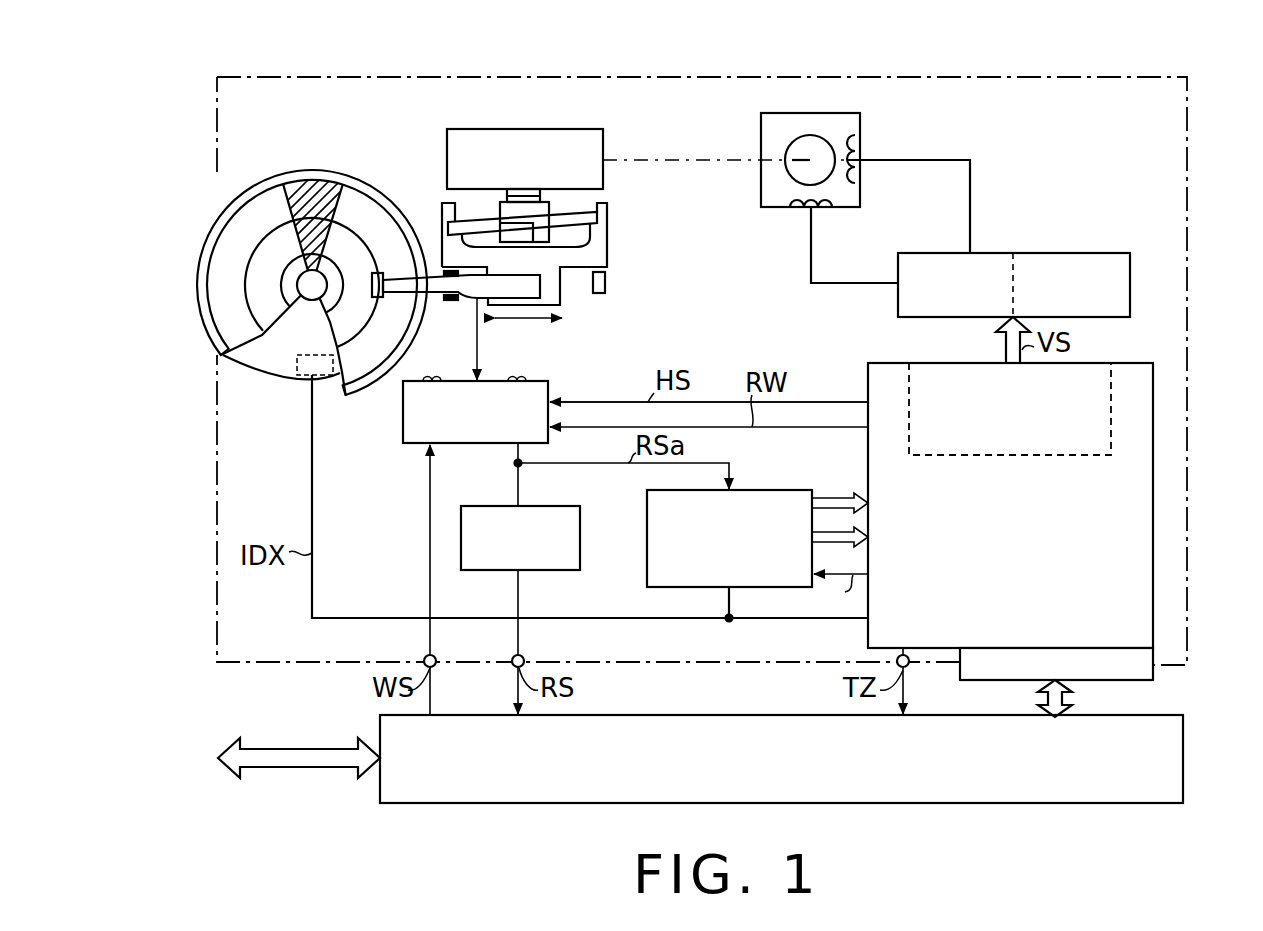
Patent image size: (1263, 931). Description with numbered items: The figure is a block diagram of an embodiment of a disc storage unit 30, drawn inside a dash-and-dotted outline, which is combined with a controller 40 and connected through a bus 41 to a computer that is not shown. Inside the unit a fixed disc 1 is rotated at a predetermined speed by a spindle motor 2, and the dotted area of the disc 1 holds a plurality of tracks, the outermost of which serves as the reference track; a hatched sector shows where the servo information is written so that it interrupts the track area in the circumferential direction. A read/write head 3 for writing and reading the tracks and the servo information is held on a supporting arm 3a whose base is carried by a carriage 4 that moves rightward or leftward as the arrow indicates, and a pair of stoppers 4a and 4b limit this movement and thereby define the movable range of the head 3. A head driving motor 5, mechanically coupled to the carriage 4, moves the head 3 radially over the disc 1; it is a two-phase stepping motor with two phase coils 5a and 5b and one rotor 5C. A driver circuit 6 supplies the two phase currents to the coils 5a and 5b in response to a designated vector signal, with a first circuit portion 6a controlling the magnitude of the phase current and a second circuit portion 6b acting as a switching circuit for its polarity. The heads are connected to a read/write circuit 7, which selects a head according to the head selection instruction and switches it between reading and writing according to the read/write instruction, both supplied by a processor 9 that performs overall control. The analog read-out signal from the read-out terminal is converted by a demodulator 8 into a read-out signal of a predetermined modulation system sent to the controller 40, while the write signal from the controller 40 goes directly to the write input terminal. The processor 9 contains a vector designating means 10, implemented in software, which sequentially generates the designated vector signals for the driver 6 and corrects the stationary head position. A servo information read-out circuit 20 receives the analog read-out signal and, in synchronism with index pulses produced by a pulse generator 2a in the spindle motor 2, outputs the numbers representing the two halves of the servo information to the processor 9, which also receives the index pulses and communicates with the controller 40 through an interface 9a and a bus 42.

The disc 1 is at (203, 334).
The spindle motor 2 is at (266, 350).
The pulse generator 2a is at (308, 377).
The read/write head 3 is at (381, 272).
The supporting arm 3a is at (535, 290).
The carriage 4 is at (607, 213).
The stopper 4a is at (606, 285).
The stopper 4b is at (448, 300).
The head driving motor 5 is at (553, 128).
The phase coil 5a is at (800, 208).
The phase coil 5b is at (855, 142).
The rotor 5C is at (787, 170).
The driver circuit 6 is at (1032, 238).
The first circuit portion 6a is at (1066, 261).
The second circuit portion 6b is at (994, 257).
The read/write circuit 7 is at (403, 437).
The demodulator 8 is at (482, 571).
The processor 9 is at (1046, 488).
The interface 9a is at (1153, 672).
The vector designating means 10 is at (1112, 392).
The servo information read-out circuit 20 is at (647, 556).
The disc storage unit 30 is at (931, 76).
The controller 40 is at (1183, 762).
The bus 41 is at (292, 748).
The bus 42 is at (1072, 700).